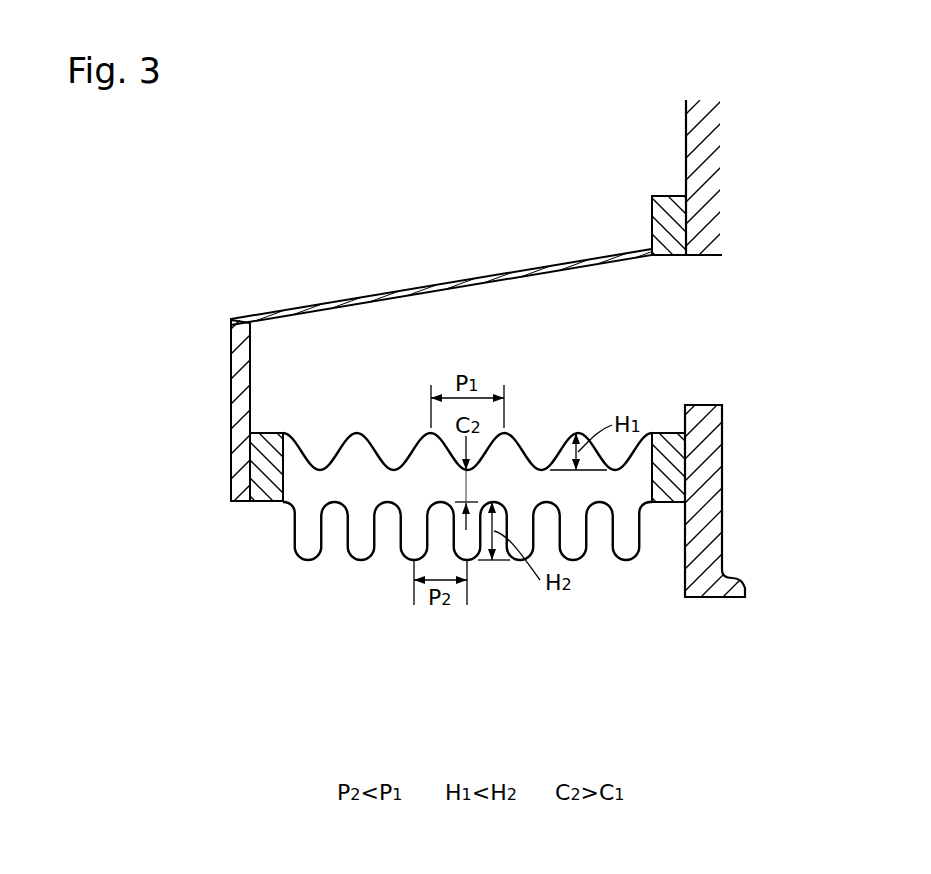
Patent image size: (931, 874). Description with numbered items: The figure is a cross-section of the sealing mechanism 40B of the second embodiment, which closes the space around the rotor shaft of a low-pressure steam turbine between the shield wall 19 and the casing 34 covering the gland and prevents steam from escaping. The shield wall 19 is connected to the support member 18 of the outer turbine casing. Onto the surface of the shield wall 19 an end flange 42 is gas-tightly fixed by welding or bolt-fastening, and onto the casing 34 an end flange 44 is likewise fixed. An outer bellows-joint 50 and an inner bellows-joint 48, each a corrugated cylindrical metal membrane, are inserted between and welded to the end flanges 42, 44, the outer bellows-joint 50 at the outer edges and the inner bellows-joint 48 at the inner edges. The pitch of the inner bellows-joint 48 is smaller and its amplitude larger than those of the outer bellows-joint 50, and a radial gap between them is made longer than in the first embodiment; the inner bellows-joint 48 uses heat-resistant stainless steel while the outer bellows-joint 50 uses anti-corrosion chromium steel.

The support member 18 is at (686, 115).
The shield wall 19 is at (231, 349).
The casing 34 is at (722, 446).
The end flange 42 is at (264, 502).
The end flange 44 is at (660, 503).
The inner bellows-joint 48 is at (360, 562).
The outer bellows-joint 50 is at (358, 432).
The sealing mechanism 40B is at (436, 683).